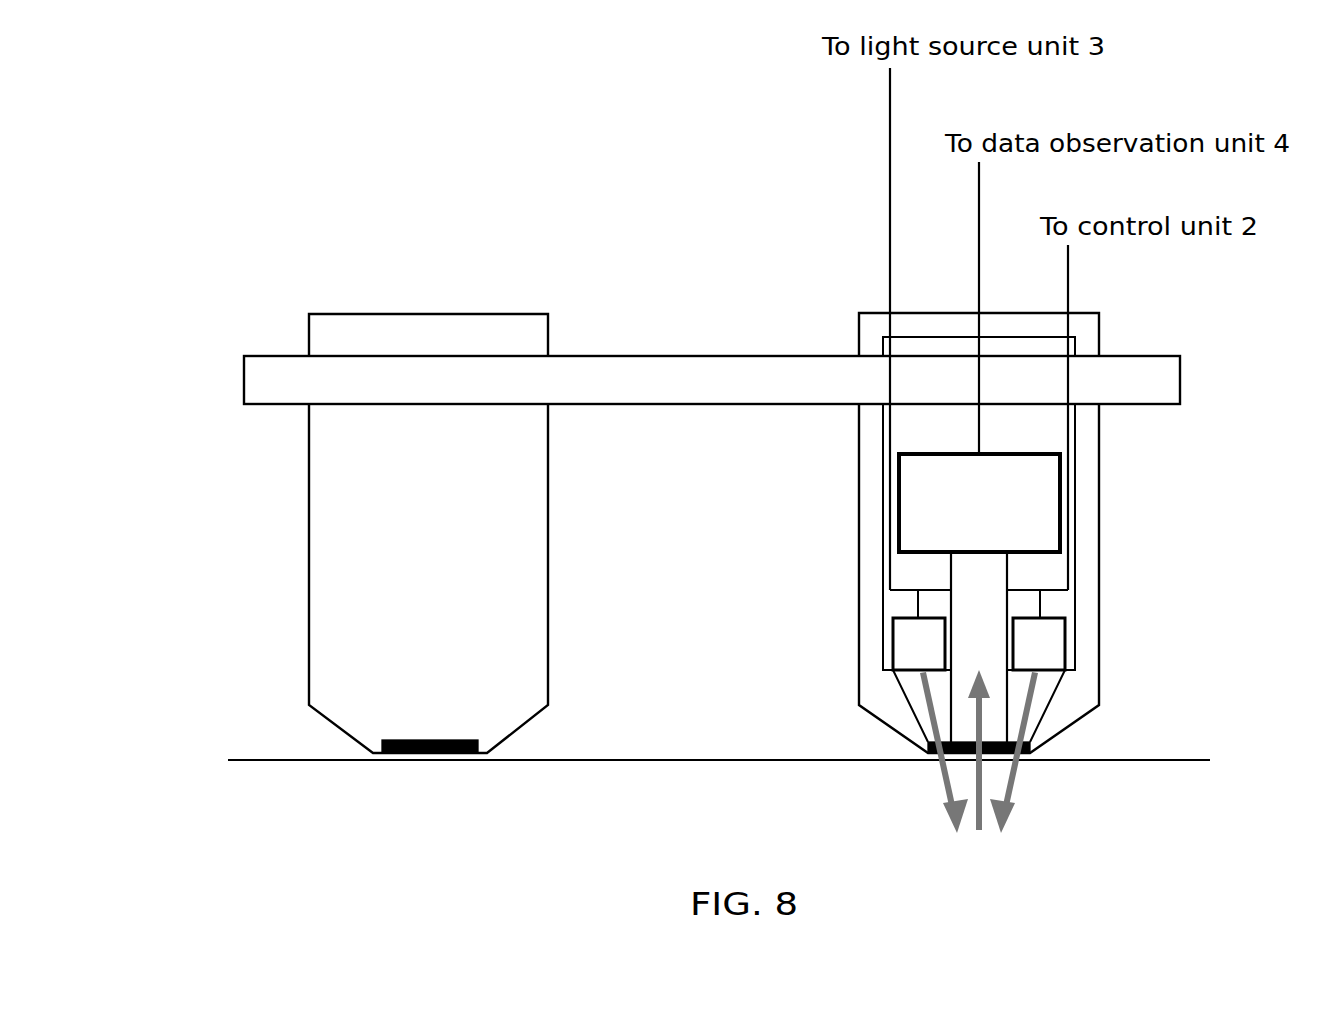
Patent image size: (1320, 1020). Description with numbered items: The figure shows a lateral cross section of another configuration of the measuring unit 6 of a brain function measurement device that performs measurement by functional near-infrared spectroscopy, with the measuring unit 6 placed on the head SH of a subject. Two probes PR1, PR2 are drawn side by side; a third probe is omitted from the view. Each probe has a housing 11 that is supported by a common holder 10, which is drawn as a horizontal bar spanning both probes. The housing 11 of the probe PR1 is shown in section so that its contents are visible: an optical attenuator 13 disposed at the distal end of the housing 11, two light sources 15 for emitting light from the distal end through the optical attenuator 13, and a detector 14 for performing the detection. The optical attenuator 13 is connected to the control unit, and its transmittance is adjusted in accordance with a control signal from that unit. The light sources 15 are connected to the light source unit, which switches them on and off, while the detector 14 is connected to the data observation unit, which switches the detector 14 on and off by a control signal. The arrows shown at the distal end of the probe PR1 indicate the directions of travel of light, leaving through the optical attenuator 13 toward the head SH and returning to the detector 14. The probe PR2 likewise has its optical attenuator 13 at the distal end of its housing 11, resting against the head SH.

The measuring unit 6 is at (697, 224).
The holder 10 is at (1180, 372).
The housing 11 is at (548, 538).
The optical attenuator 13 is at (442, 755).
The detector 14 is at (1063, 463).
The light sources 15 is at (893, 633).
The probe PR1 is at (808, 526).
The probe PR2 is at (280, 526).
The head SH is at (657, 777).